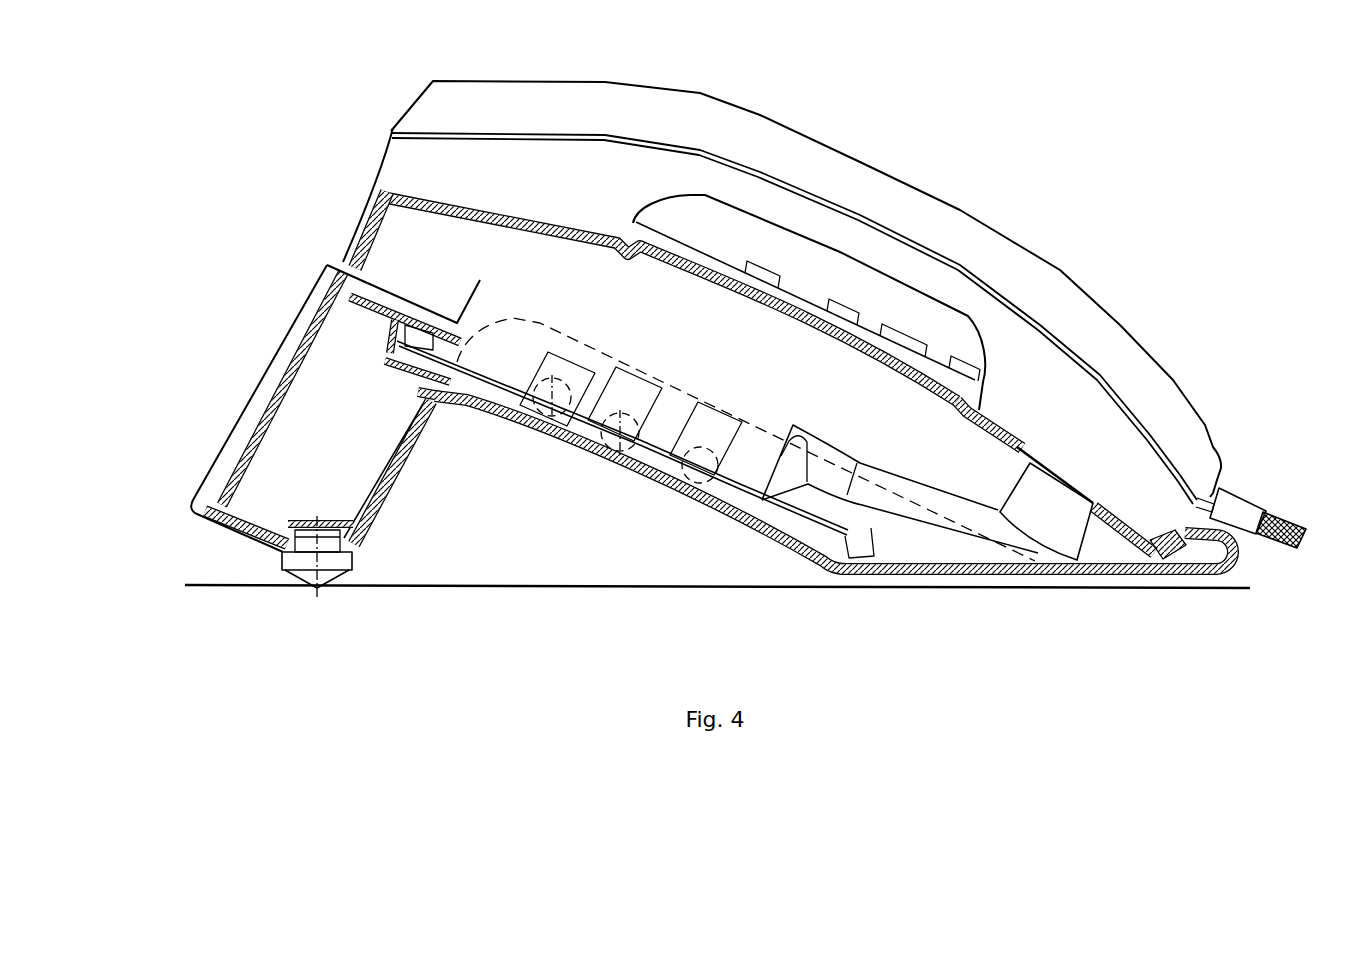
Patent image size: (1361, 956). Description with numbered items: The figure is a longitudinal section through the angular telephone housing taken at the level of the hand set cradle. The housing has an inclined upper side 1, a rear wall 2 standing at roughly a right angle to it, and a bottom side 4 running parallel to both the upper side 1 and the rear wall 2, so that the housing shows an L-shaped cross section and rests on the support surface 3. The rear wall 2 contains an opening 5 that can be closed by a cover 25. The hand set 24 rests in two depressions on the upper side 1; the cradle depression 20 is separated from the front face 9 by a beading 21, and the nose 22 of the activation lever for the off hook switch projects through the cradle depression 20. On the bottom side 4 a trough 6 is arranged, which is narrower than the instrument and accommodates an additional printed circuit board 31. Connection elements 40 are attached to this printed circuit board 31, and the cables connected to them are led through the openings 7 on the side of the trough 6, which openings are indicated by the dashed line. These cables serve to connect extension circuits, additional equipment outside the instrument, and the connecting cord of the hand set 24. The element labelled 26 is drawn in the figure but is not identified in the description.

The upper side 1 is at (682, 247).
The rear wall 2 is at (310, 288).
The support surface 3 is at (363, 588).
The bottom side 4 is at (433, 402).
The opening 5 is at (318, 366).
The trough 6 is at (783, 545).
The openings 7 is at (540, 398).
The front face 9 is at (1220, 569).
The cradle depression 20 is at (1132, 540).
The beading 21 is at (1247, 493).
The nose of the activation lever 22 is at (1040, 533).
The hand set 24 is at (1083, 403).
The cover 25 is at (253, 430).
The lever 26 is at (847, 523).
The printed circuit board 31 is at (748, 505).
The connection elements 40 is at (695, 497).